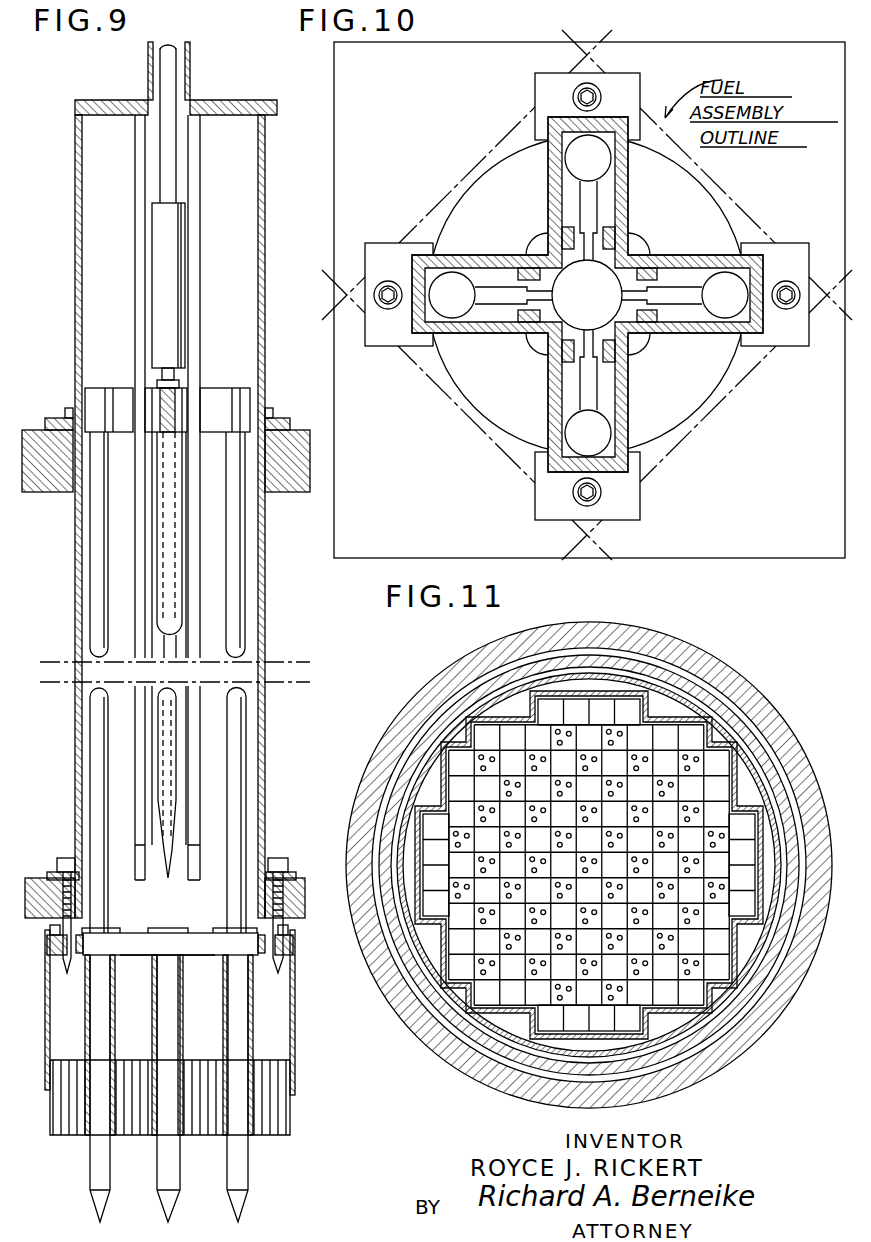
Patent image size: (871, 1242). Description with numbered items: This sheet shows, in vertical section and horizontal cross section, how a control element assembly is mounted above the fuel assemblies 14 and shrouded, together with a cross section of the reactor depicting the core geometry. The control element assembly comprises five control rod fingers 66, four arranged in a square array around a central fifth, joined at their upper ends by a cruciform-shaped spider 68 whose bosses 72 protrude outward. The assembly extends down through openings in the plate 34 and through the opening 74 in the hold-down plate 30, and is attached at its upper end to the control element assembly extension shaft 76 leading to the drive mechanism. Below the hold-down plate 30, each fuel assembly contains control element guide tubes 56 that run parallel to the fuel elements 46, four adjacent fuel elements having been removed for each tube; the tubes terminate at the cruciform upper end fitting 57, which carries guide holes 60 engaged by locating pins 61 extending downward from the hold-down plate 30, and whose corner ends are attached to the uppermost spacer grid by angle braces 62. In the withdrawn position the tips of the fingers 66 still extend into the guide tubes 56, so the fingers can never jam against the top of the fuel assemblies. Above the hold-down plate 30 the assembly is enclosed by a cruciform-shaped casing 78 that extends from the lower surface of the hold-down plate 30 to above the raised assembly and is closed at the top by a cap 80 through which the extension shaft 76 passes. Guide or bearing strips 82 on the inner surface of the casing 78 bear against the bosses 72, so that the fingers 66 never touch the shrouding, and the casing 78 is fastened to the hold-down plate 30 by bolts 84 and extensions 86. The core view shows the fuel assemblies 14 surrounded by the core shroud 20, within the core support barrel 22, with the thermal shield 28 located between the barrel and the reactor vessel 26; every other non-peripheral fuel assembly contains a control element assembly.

In FIG. 9, the fuel assemblies 14 is at (308, 1125).
In FIG. 11, the fuel assemblies 14 is at (688, 755).
In FIG. 11, the core shroud 20 is at (491, 722).
In FIG. 11, the core support barrel 22 is at (720, 720).
In FIG. 11, the reactor vessel 26 is at (795, 762).
In FIG. 11, the thermal shield 28 is at (743, 727).
In FIG. 9, the hold-down plate 30 is at (302, 884).
In FIG. 10, the hold-down plate 30 is at (410, 110).
In FIG. 9, the plate 34 is at (285, 440).
In FIG. 9, the fuel elements 46 is at (275, 1092).
In FIG. 9, the control element guide tubes 56 is at (230, 985).
In FIG. 9, the upper end fitting 57 is at (210, 955).
In FIG. 9, the guide holes 60 is at (290, 942).
In FIG. 9, the locating pins 61 is at (285, 962).
In FIG. 9, the angle braces 62 is at (295, 1030).
In FIG. 9, the control rod fingers 66 is at (238, 527).
In FIG. 10, the control rod fingers 66 is at (578, 152).
In FIG. 9, the spider 68 is at (123, 393).
In FIG. 10, the spider 68 is at (590, 197).
In FIG. 10, the bosses 72 is at (549, 236).
In FIG. 9, the opening 74 is at (266, 890).
In FIG. 10, the opening 74 is at (704, 400).
In FIG. 9, the control element assembly extension shafts 76 is at (162, 232).
In FIG. 9, the cruciform-shaped casing 78 is at (265, 560).
In FIG. 10, the cruciform-shaped casing 78 is at (548, 185).
In FIG. 9, the cap 80 is at (228, 108).
In FIG. 9, the guide or bearing strips 82 is at (137, 553).
In FIG. 10, the guide or bearing strips 82 is at (608, 235).
In FIG. 9, the bolts 84 is at (63, 856).
In FIG. 10, the bolts 84 is at (790, 306).
In FIG. 9, the extensions 86 is at (55, 874).
In FIG. 10, the extensions 86 is at (785, 250).